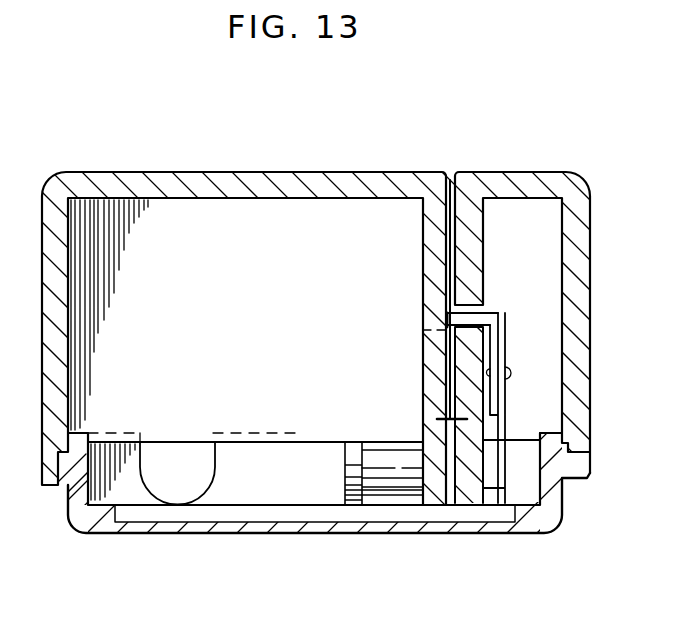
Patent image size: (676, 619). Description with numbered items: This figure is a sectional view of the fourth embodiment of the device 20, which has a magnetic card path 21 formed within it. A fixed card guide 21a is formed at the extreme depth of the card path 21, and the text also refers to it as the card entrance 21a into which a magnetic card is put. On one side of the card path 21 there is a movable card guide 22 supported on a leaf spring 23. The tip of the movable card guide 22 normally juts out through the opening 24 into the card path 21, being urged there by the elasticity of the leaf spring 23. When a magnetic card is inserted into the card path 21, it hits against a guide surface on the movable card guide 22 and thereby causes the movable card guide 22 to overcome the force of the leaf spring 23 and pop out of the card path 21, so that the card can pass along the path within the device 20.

The device 20 is at (137, 173).
The magnetic card path 21 is at (456, 251).
The fixed card guide 21a is at (447, 420).
The movable card guide 22 is at (486, 318).
The leaf spring 23 is at (500, 452).
The opening 24 is at (463, 303).